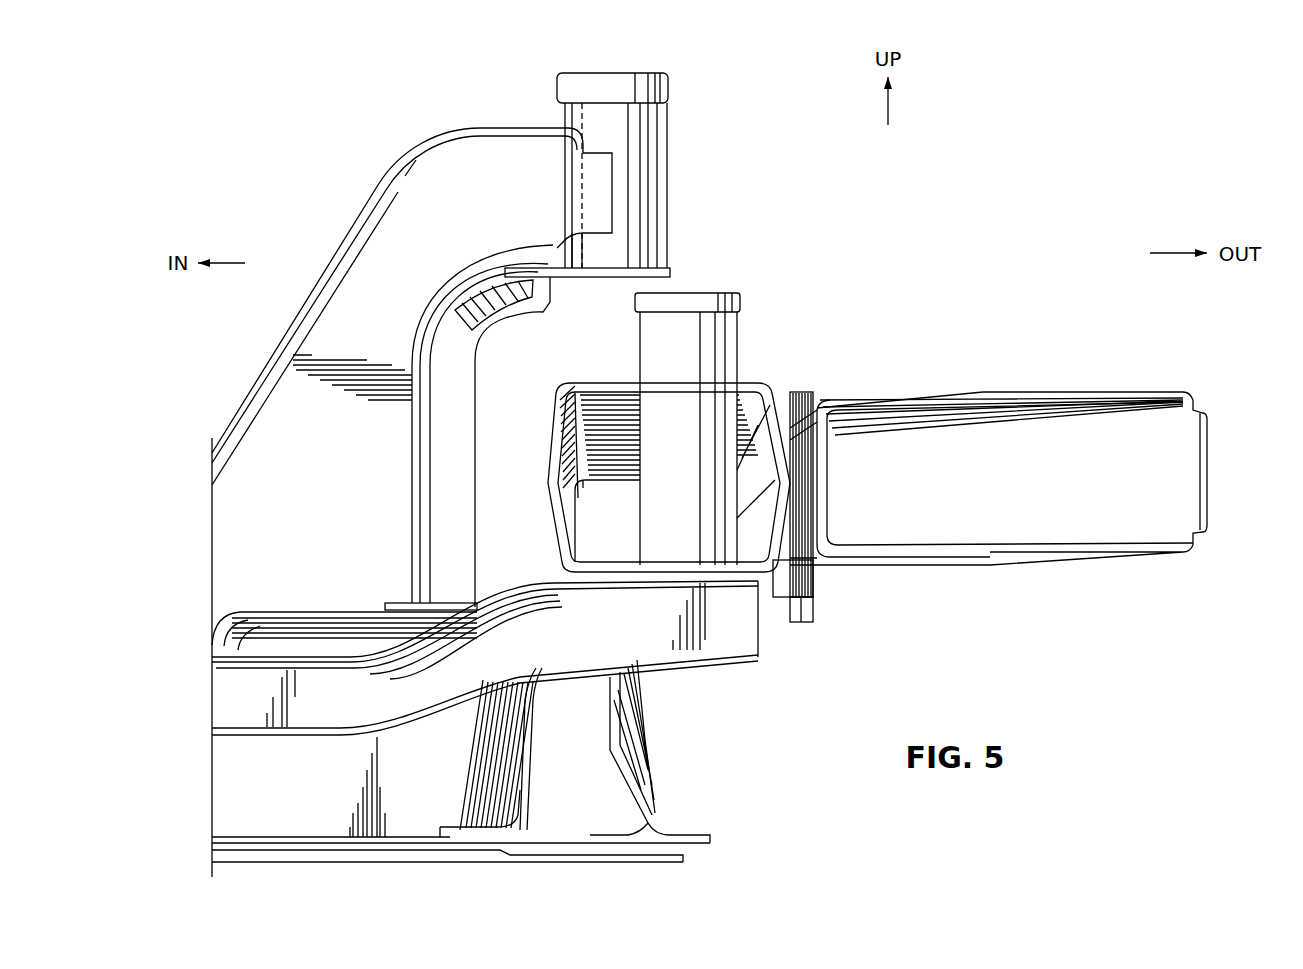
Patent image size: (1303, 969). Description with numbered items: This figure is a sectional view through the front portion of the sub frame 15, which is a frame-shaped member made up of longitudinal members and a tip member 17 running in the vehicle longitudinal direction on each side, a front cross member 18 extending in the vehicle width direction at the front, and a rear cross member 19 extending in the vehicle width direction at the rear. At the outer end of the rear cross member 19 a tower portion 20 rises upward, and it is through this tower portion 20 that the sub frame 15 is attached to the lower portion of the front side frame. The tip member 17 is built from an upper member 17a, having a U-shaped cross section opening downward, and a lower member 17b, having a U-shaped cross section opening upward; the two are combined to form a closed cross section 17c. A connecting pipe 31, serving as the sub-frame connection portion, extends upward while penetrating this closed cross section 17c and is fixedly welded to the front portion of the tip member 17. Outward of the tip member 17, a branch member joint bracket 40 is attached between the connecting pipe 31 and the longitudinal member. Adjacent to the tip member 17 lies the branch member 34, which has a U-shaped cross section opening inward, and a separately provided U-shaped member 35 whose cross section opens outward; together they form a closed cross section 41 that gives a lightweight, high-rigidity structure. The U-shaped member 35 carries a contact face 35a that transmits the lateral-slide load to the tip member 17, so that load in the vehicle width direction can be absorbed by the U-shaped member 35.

The sub frame 15 is at (320, 607).
The tip member 17 is at (574, 434).
The upper member 17a is at (562, 390).
The lower member 17b is at (557, 537).
The closed cross section 17c is at (600, 507).
The front cross member 18 is at (477, 655).
The rear cross member 19 is at (279, 784).
The tower portion 20 is at (302, 449).
The connecting pipe 31 is at (737, 339).
The branch member 34 is at (1013, 451).
The U-shaped member 35 is at (881, 467).
The contact face 35a is at (821, 489).
The branch member joint bracket 40 is at (818, 580).
The closed cross section 41 is at (984, 487).